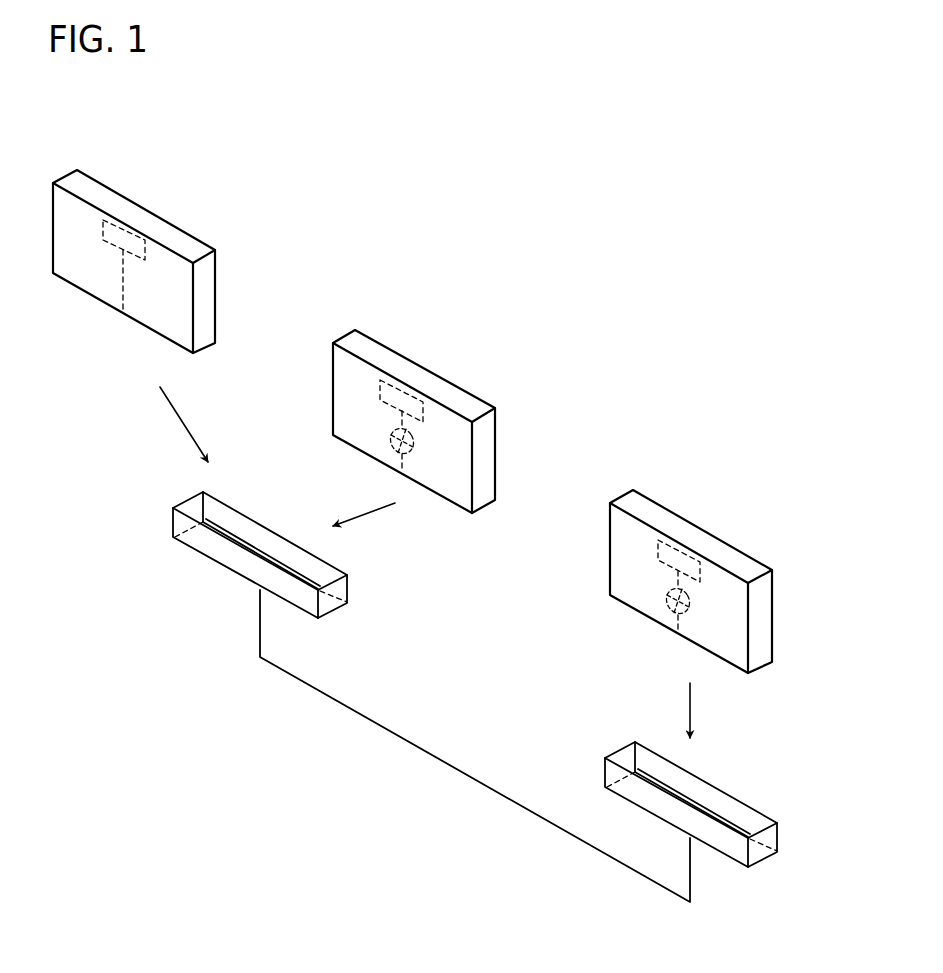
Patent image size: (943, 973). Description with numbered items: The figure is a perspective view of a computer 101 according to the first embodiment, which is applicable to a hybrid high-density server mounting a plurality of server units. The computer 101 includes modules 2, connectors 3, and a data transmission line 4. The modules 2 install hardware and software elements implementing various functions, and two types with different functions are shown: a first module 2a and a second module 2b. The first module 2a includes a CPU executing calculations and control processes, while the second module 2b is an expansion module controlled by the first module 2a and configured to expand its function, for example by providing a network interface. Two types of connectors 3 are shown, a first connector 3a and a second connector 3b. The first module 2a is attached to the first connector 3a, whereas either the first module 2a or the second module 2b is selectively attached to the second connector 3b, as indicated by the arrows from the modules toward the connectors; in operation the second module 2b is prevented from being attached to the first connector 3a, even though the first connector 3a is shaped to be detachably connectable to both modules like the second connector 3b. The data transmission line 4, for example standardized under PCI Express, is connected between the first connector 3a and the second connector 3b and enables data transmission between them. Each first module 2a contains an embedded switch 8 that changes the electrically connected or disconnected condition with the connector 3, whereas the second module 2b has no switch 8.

The computer 101 is at (590, 176).
The module 2 is at (412, 409).
The first module 2a is at (415, 380).
The second module 2b is at (135, 218).
The connector 3 is at (475, 713).
The first connector 3a is at (720, 840).
The second connector 3b is at (208, 545).
The data transmission line 4 is at (468, 777).
The switch 8 is at (413, 450).